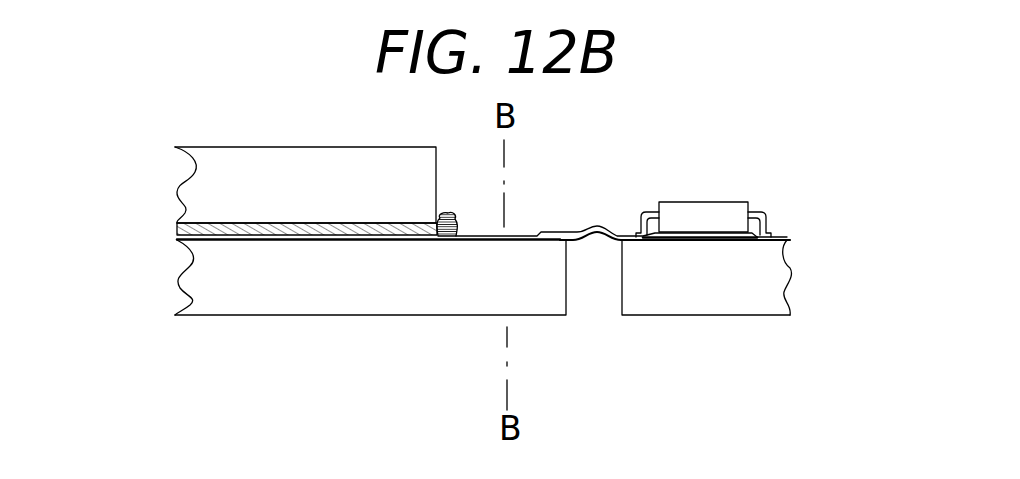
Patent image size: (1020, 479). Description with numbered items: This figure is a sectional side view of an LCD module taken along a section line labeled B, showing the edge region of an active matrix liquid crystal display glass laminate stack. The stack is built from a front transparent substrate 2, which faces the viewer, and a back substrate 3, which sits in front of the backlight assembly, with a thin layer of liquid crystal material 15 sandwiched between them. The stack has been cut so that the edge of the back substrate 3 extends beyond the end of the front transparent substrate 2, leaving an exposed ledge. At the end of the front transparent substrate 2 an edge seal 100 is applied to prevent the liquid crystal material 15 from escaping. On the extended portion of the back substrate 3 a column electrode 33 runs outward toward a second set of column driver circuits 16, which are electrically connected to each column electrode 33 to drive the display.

The front transparent substrate 2 is at (195, 181).
The back substrate 3 is at (192, 288).
The liquid crystal material 15 is at (178, 228).
The second set of column driver circuits 16 is at (812, 193).
The column electrode 33 is at (513, 237).
The edge seal 100 is at (442, 212).